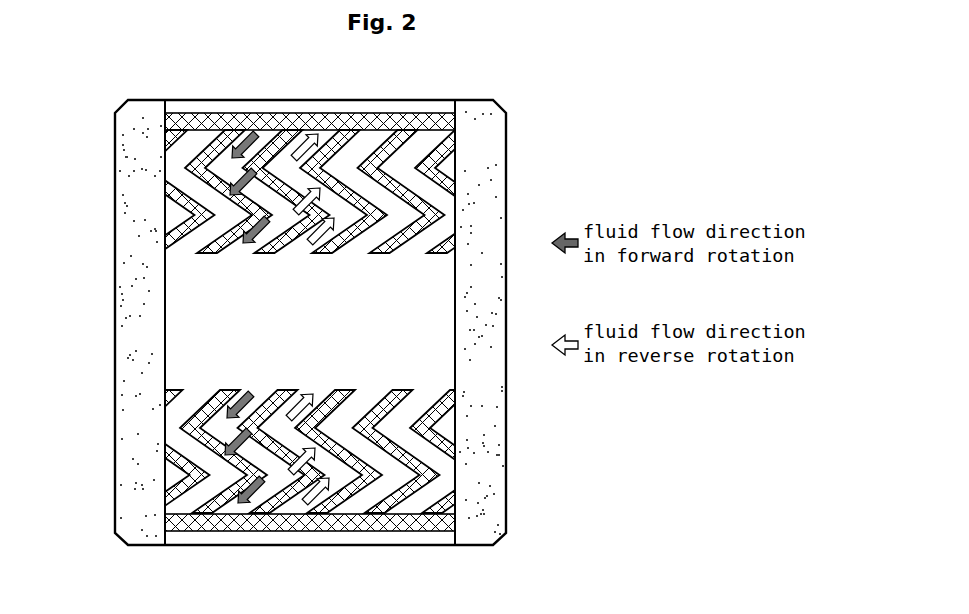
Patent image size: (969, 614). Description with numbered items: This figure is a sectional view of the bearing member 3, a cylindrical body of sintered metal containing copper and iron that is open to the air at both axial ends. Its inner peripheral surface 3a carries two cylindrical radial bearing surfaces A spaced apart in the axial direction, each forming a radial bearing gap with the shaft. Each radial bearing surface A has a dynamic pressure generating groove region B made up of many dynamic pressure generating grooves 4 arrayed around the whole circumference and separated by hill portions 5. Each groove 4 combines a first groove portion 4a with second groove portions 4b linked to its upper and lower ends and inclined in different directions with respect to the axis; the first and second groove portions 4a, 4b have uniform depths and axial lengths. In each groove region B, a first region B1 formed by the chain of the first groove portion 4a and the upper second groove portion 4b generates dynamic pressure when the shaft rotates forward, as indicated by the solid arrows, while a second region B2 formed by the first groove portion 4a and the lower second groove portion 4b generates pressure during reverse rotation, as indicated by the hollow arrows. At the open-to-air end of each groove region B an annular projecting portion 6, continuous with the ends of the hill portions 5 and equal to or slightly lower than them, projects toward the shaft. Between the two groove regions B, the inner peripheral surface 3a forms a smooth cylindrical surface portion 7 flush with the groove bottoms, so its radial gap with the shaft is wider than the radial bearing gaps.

The bearing member 3 is at (512, 110).
The inner peripheral surface 3a is at (456, 277).
The dynamic pressure generating groove 4 is at (265, 130).
The first groove portion 4a is at (362, 193).
The second groove portion 4b is at (373, 140).
The hill portion 5 is at (340, 140).
The annular projecting portion 6 is at (317, 118).
The cylindrical surface portion 7 is at (210, 320).
The radial bearing surface A is at (172, 166).
The dynamic pressure generating groove region B is at (193, 260).
The first region B1 is at (515, 128).
The second region B2 is at (105, 168).